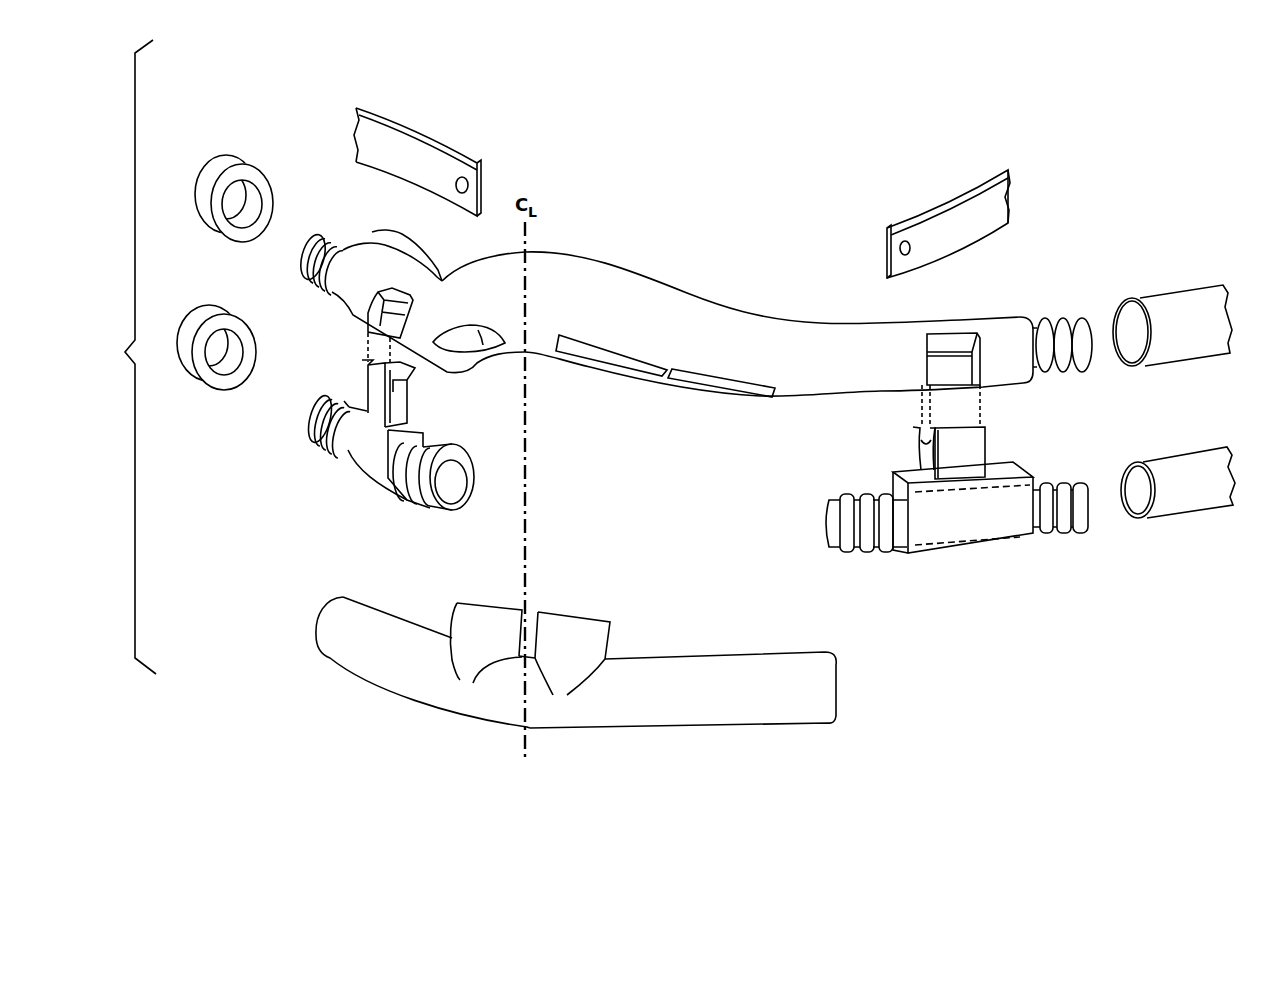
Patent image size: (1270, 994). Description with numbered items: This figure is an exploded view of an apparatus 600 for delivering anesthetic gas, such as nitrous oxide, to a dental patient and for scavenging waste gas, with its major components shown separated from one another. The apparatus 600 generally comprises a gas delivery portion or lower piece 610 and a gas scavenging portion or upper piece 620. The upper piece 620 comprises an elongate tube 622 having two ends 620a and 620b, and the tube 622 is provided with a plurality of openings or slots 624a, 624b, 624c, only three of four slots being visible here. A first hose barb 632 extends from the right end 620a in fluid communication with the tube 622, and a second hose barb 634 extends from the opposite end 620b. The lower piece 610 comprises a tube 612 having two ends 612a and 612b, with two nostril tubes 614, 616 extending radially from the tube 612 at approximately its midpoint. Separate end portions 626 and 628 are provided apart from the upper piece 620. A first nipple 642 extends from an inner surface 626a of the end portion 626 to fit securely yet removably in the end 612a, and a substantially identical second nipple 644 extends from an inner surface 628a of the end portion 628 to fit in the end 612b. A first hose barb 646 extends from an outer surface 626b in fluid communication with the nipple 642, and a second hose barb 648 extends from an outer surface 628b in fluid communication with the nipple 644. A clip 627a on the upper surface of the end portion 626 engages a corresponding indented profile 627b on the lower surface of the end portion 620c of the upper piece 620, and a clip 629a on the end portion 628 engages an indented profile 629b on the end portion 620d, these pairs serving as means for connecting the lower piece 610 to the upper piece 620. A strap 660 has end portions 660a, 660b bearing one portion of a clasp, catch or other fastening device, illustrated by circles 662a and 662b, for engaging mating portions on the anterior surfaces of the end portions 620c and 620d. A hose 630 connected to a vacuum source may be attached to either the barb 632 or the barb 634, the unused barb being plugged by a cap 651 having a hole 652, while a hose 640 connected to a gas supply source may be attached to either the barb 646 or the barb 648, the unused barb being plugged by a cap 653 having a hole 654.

The apparatus 600 is at (745, 195).
The gas delivery portion (lower piece) 610 is at (554, 591).
The tube 612 is at (548, 730).
The end of tube 612a is at (830, 692).
The end of tube 612b is at (330, 605).
The nostril tube 614 is at (597, 612).
The nostril tube 616 is at (477, 603).
The gas scavenging portion (upper piece) 620 is at (684, 266).
The right end of upper piece 620a is at (1028, 317).
The end of upper piece 620b is at (353, 243).
The end portion of upper piece 620c is at (1020, 313).
The end portion of upper piece 620d is at (372, 232).
The elongate tube 622 is at (725, 310).
The opening/slot 624a is at (738, 397).
The opening/slot 624b is at (592, 350).
The third opening 624c is at (483, 345).
The end portion 626 is at (972, 518).
The inner surface of end portion 626a is at (895, 557).
The outer surface of end portion 626b is at (1032, 540).
The clip 627a is at (970, 448).
The indented profile 627b is at (950, 377).
The end portion 628 is at (373, 470).
The inner surface of end portion 628a is at (405, 497).
The outer surface of end portion 628b is at (349, 457).
The clip 629a is at (373, 388).
The indented profile 629b is at (387, 313).
The hose 630 is at (1140, 293).
The first hose barb 632 is at (1067, 313).
The second hose barb 634 is at (311, 240).
The hose 640 is at (1175, 517).
The first nipple 642 is at (833, 547).
The second nipple 644 is at (456, 510).
The first hose barb 646 is at (1065, 532).
The second hose barb 648 is at (313, 413).
The cap 651 is at (211, 150).
The hole 652 is at (214, 223).
The cap 653 is at (195, 296).
The hole 654 is at (212, 378).
The strap 660 is at (411, 118).
The first strap portion 660a is at (885, 258).
The second strap portion 660b is at (482, 187).
The fastening device portion (circle) 662a is at (909, 236).
The fastening device portion (circle) 662b is at (462, 176).